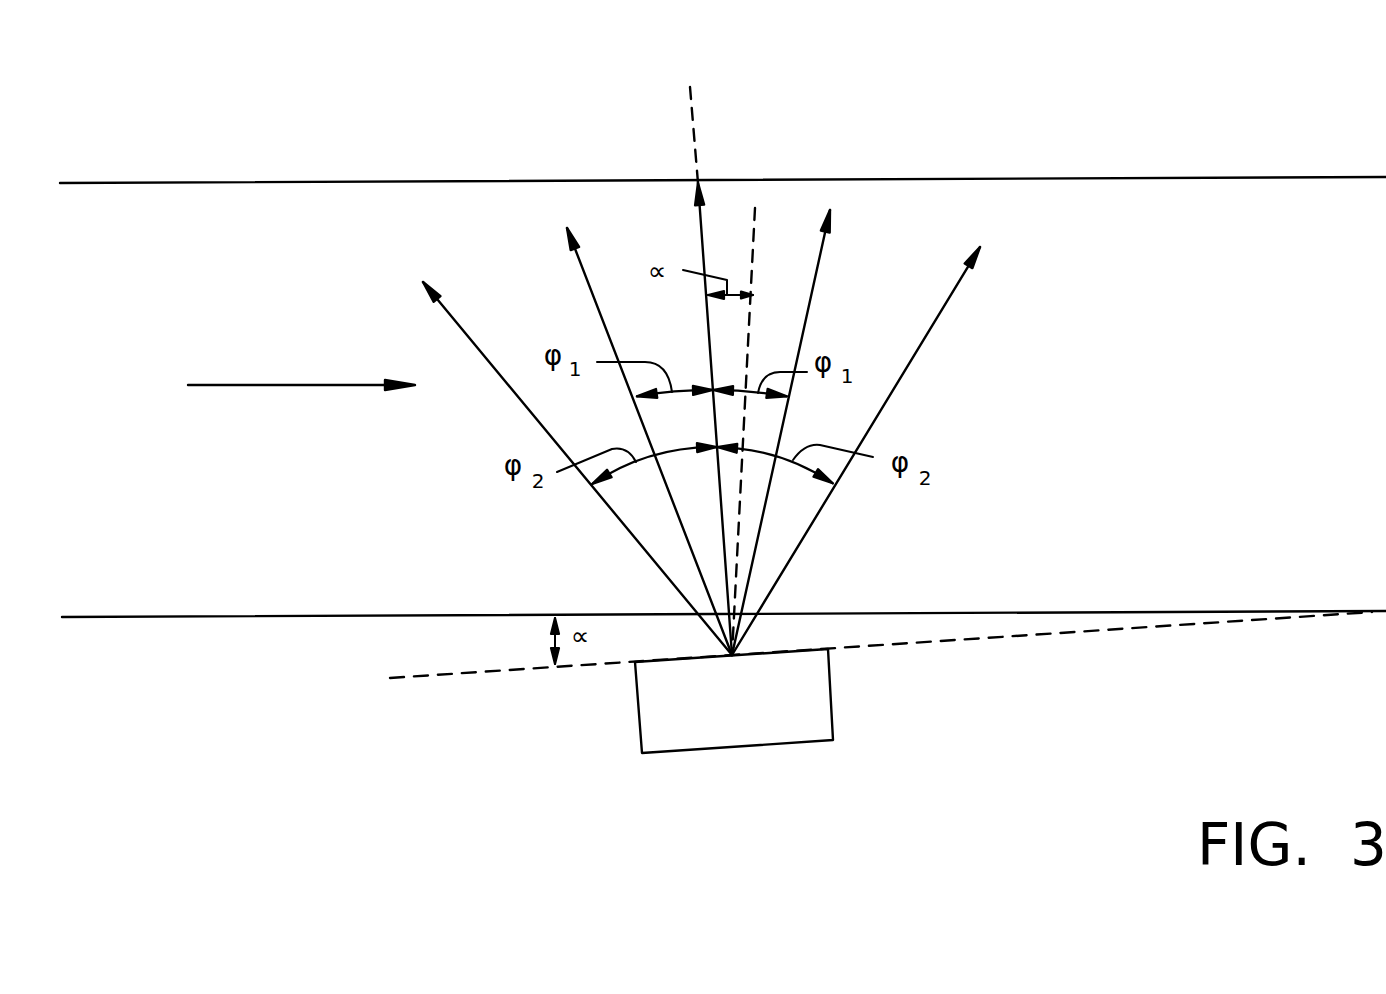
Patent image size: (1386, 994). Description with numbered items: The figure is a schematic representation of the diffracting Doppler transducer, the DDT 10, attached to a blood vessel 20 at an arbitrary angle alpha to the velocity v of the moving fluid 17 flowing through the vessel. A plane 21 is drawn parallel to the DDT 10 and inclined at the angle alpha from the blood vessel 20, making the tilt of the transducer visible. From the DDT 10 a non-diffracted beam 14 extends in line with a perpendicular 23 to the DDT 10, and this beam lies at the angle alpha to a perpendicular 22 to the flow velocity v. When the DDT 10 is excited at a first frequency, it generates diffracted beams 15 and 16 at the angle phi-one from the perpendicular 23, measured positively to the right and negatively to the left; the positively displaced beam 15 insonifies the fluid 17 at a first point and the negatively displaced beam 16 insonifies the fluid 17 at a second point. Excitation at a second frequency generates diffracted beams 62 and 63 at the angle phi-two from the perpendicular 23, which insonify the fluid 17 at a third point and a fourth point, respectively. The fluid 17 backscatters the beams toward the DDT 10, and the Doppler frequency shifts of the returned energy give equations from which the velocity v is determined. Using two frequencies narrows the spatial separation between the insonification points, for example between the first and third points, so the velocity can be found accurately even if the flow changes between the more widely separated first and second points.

The DDT 10 is at (813, 738).
The non-diffracted beam 14 is at (700, 240).
The diffracted beam 15 is at (818, 283).
The diffracted beam 16 is at (602, 313).
The moving fluid 17 is at (318, 370).
The blood vessel 20 is at (723, 155).
The plane 21 is at (490, 670).
The perpendicular to the flow velocity 22 is at (809, 374).
The perpendicular to the DDT 23 is at (690, 127).
The diffracted beam 62 is at (940, 313).
The diffracted beam 63 is at (562, 449).